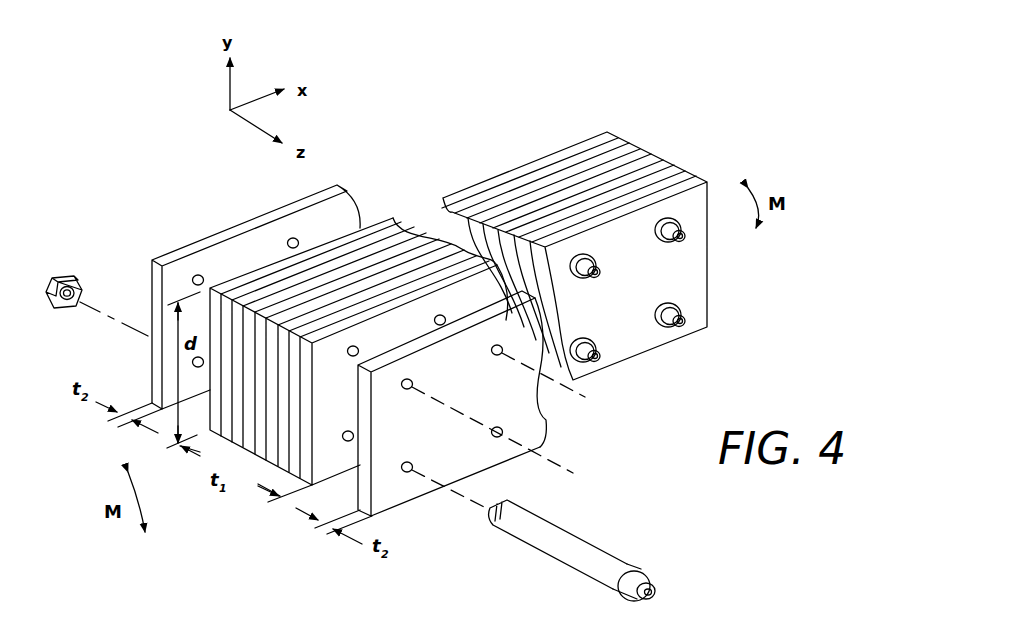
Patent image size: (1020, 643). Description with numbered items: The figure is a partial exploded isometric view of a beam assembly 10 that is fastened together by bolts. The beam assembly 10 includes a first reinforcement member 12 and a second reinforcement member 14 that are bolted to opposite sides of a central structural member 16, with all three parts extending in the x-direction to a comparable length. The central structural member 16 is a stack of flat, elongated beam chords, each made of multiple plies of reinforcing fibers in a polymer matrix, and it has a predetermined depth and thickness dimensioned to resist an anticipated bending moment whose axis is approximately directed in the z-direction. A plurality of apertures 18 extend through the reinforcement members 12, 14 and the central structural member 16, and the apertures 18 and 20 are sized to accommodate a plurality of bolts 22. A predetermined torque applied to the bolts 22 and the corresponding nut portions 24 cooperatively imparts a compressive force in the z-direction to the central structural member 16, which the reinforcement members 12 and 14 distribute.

The beam assembly 10 is at (664, 58).
The first reinforcement member 12 is at (384, 496).
The second reinforcement member 14 is at (152, 366).
The central structural member 16 is at (392, 218).
The apertures 18 is at (204, 276).
The apertures 20 is at (358, 349).
The bolts 22 is at (656, 586).
The nut portions 24 is at (70, 281).